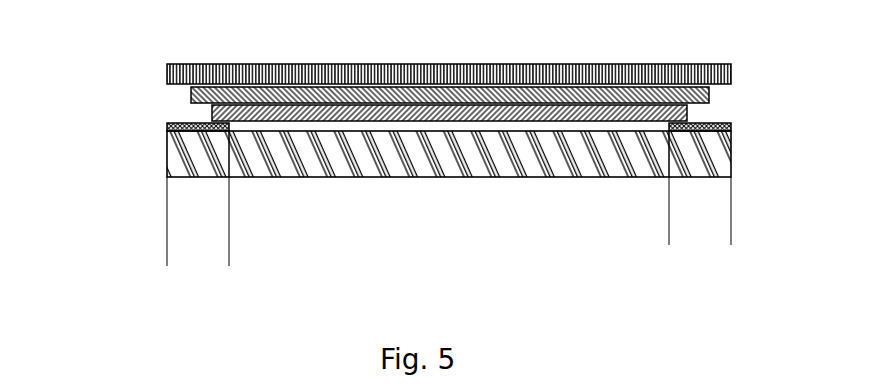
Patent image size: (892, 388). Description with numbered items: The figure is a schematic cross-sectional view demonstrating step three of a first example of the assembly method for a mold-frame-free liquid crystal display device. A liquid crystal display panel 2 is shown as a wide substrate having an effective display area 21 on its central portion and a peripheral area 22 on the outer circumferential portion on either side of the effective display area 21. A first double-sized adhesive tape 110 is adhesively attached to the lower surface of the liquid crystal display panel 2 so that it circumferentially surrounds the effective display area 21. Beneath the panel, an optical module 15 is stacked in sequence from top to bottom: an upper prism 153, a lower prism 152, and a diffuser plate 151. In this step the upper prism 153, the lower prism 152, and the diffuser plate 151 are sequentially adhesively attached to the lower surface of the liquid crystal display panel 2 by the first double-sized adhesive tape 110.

The optical module 15 is at (376, 74).
The diffuser plate 151 is at (184, 72).
The lower prism 152 is at (193, 97).
The upper prism 153 is at (215, 116).
The first double-sized adhesive tape 110 is at (712, 122).
The liquid crystal display panel 2 is at (708, 158).
The effective display area 21 is at (669, 206).
The peripheral area 22 is at (731, 241).